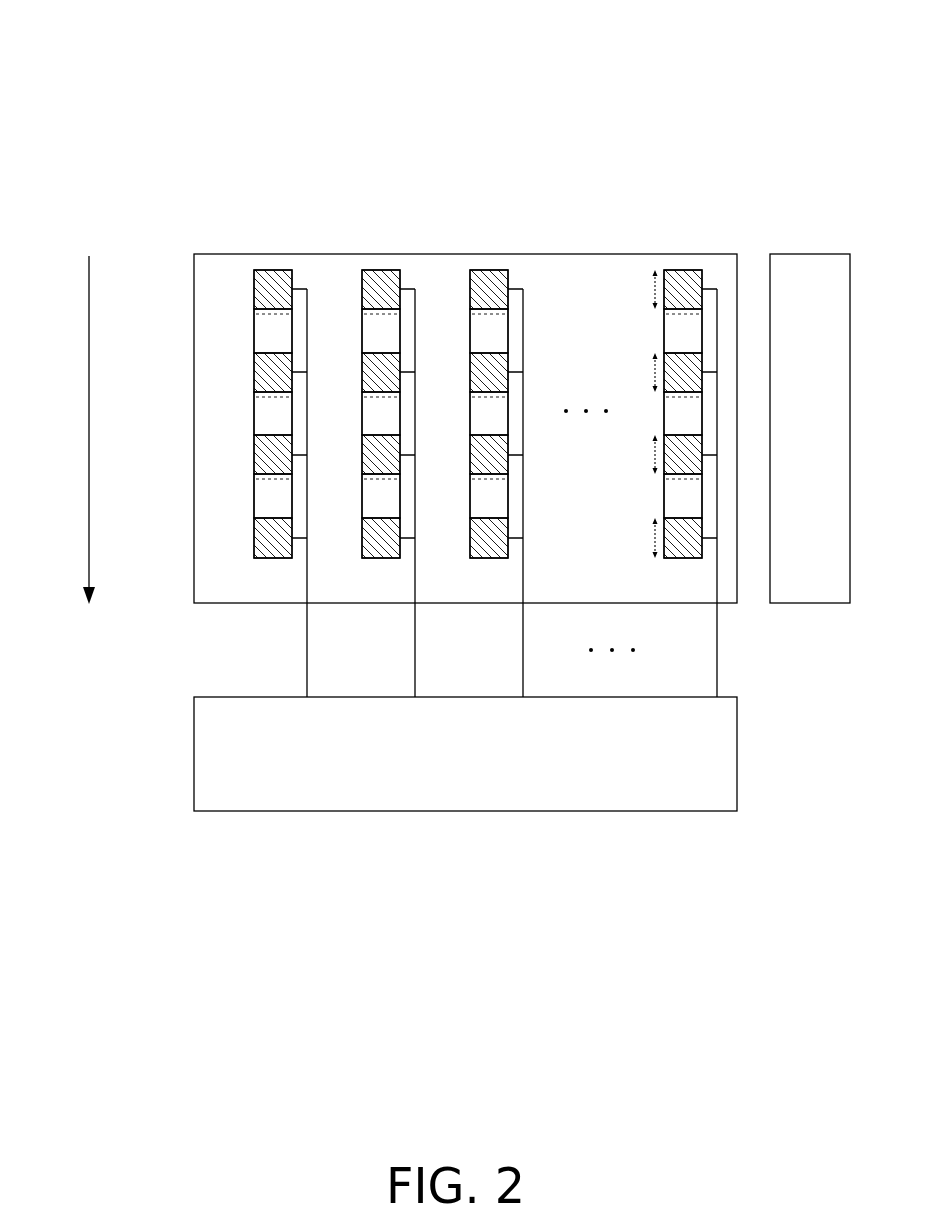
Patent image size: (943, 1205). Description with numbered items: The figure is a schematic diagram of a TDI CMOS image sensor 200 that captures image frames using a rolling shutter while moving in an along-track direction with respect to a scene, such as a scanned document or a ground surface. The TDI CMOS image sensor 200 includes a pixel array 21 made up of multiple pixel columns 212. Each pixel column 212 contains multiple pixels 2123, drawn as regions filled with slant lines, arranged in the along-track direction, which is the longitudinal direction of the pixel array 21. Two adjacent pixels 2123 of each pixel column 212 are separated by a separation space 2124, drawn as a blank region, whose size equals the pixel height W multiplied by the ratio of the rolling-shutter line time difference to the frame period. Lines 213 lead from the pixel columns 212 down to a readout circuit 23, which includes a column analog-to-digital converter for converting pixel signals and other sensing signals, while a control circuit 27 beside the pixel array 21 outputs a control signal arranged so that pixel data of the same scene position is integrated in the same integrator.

The TDI CMOS image sensor 200 is at (177, 42).
The pixel array 21 is at (217, 254).
The pixel column 212 is at (268, 270).
The pixel 2123 is at (254, 289).
The separation space 2124 is at (254, 331).
The output line 213 is at (306, 643).
The readout circuit 23 is at (737, 750).
The control circuit 27 is at (805, 254).